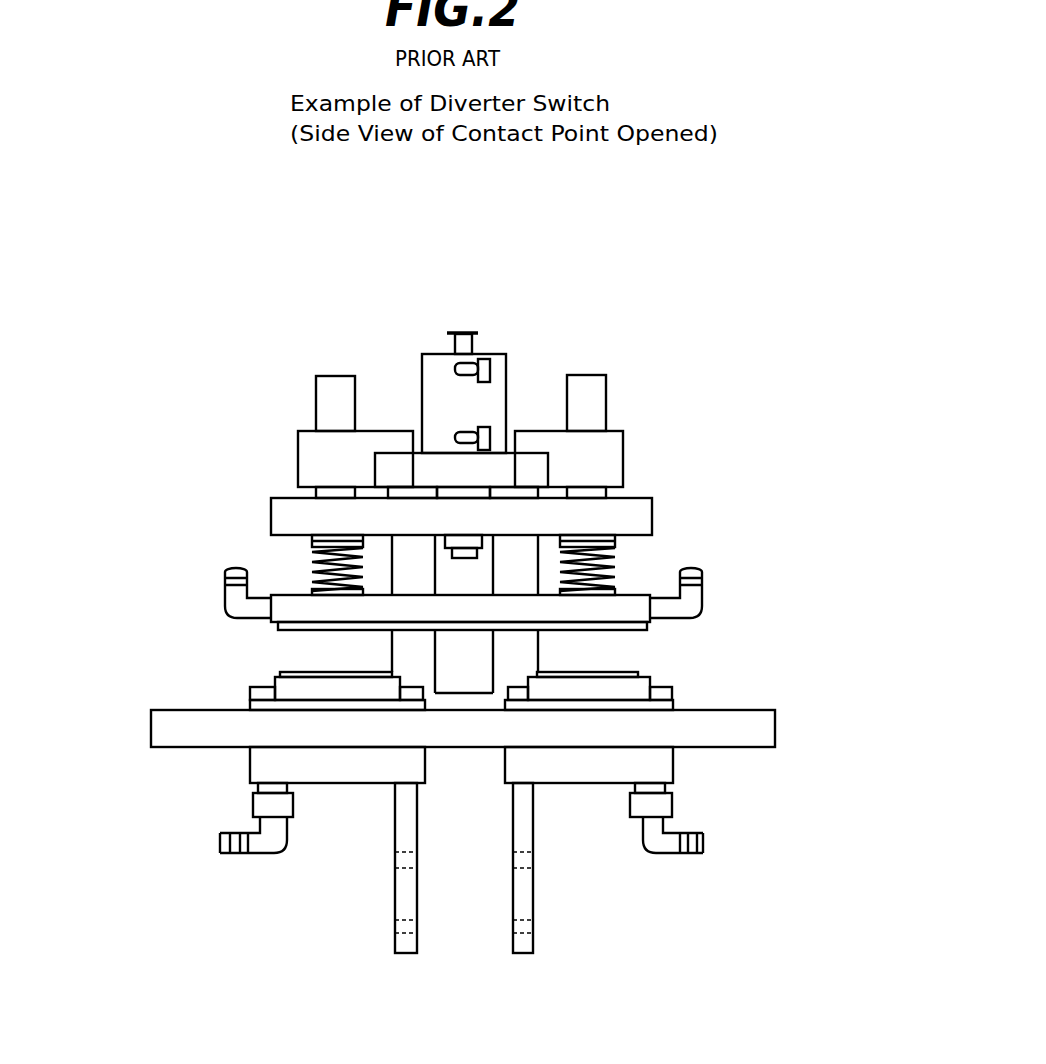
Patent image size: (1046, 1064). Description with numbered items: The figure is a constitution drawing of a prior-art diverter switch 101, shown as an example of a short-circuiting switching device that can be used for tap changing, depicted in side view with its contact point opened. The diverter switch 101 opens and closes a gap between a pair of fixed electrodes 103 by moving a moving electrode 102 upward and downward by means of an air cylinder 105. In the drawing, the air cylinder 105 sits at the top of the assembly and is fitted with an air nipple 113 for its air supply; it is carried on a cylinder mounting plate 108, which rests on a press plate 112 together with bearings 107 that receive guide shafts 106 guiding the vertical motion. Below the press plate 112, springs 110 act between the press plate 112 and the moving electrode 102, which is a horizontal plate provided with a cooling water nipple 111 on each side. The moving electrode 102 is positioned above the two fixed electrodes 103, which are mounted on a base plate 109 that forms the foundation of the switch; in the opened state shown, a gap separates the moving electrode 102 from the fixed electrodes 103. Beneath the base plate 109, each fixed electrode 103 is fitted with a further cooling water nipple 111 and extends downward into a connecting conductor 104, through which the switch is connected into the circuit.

The diverter switch 101 is at (516, 327).
The moving electrode 102 is at (630, 611).
The fixed electrode 103 is at (285, 672).
The connecting conductor 104 is at (398, 955).
The air cylinder 105 is at (437, 357).
The guide shaft 106 is at (316, 398).
The bearing 107 is at (298, 438).
The cylinder mounting plate 108 is at (375, 463).
The base plate 109 is at (182, 737).
The spring 110 is at (312, 558).
The cooling water nipple 111 is at (225, 588).
The press plate 112 is at (652, 504).
The air nipple 113 is at (492, 362).